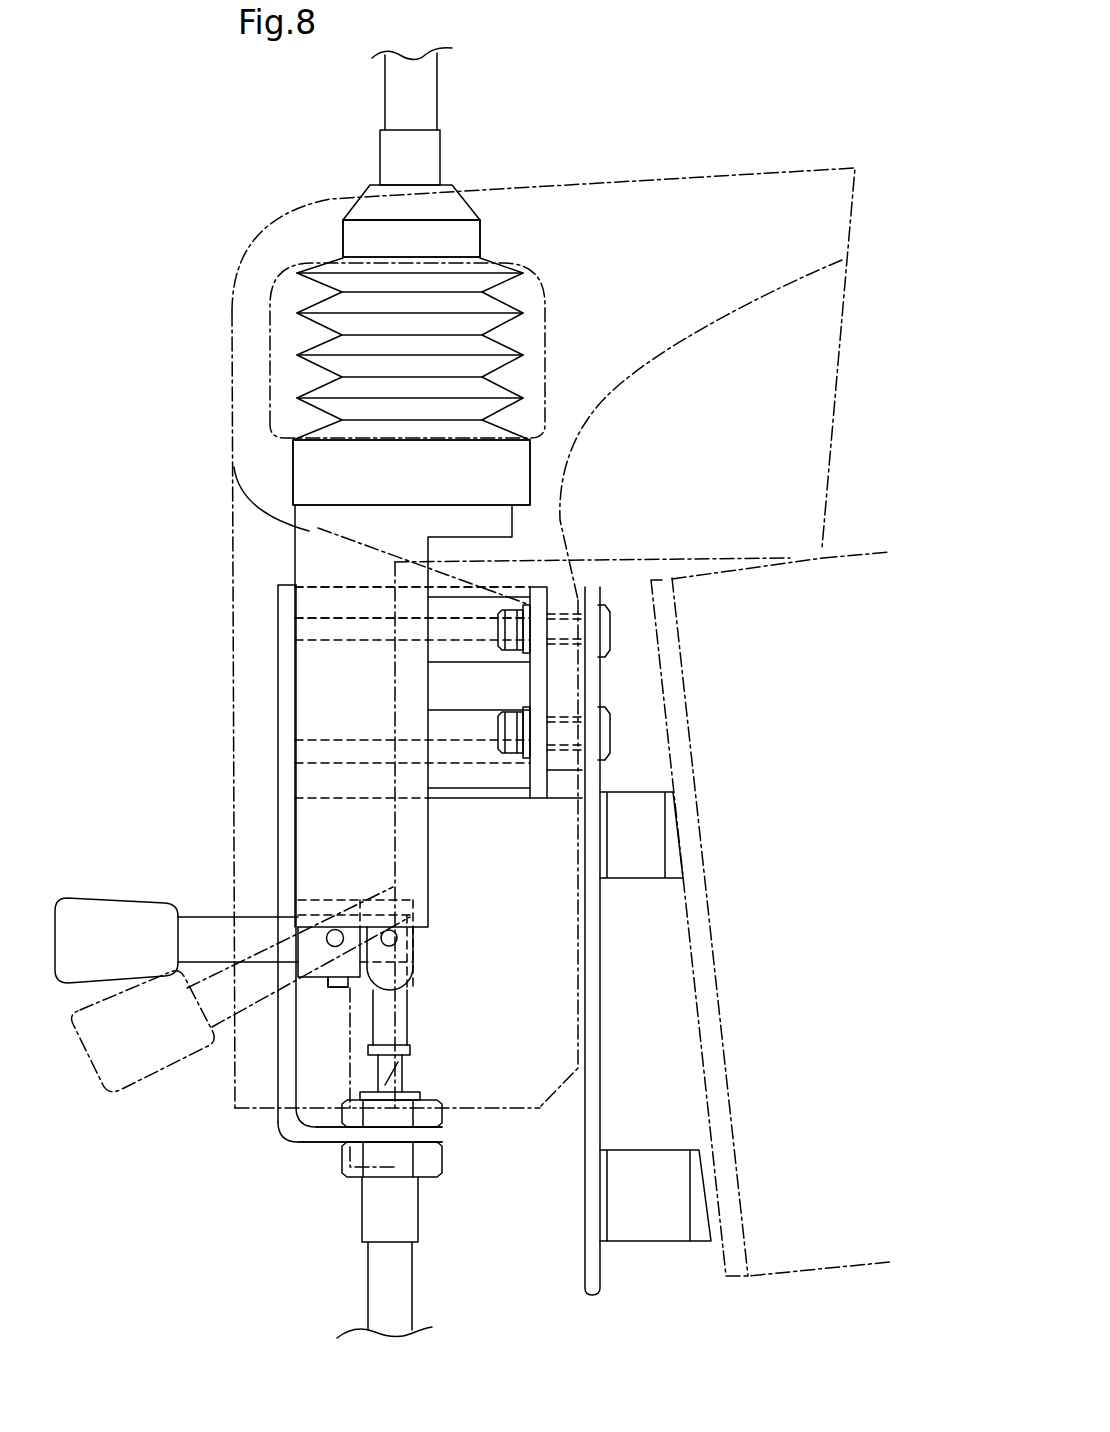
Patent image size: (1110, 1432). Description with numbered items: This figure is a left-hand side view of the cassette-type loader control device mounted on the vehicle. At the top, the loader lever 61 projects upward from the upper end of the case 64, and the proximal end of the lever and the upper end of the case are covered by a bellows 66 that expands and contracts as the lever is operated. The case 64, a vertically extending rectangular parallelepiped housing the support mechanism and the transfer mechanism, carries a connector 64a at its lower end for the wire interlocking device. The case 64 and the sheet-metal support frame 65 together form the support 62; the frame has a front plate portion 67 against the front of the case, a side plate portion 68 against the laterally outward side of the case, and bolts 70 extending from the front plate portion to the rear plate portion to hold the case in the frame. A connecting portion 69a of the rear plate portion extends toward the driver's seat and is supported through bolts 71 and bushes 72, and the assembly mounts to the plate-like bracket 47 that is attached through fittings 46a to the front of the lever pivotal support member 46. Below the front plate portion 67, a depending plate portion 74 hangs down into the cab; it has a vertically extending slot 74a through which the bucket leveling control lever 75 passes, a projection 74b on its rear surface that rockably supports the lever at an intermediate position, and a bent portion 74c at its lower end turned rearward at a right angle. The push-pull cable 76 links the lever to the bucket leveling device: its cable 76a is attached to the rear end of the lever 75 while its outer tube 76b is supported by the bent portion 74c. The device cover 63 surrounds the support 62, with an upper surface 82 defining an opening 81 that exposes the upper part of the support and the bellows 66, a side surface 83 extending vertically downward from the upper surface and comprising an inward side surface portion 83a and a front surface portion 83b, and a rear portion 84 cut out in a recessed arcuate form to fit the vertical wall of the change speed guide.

The loader lever 61 is at (423, 98).
The support 62 is at (151, 536).
The device cover 63 is at (208, 329).
The case 64 is at (309, 531).
The connector 64a is at (405, 1020).
The support frame 65 is at (282, 606).
The bellows 66 is at (300, 384).
The front plate portion 67 is at (282, 699).
The side plate portion 68 is at (343, 588).
The connecting portion 69a is at (543, 782).
The bolts 70 is at (480, 603).
The bolts 71 is at (600, 612).
The bushes 72 is at (560, 657).
The depending plate portion 74 is at (285, 842).
The slot 74a is at (310, 902).
The projection 74b is at (328, 984).
The bent portion 74c is at (435, 1137).
The bucket leveling control lever 75 is at (55, 950).
The push-pull cable 76 is at (278, 1185).
The cable 76a is at (380, 1063).
The outer tube 76b is at (377, 1203).
The opening 81 is at (551, 376).
The upper surface 82 is at (706, 178).
The side surface 83 is at (233, 1040).
The inward side surface portion 83a is at (582, 842).
The front surface portion 83b is at (229, 488).
The rear portion 84 is at (658, 350).
The lever pivotal support member 46 is at (702, 1010).
The fittings 46a is at (687, 1196).
The bracket 47 is at (587, 940).